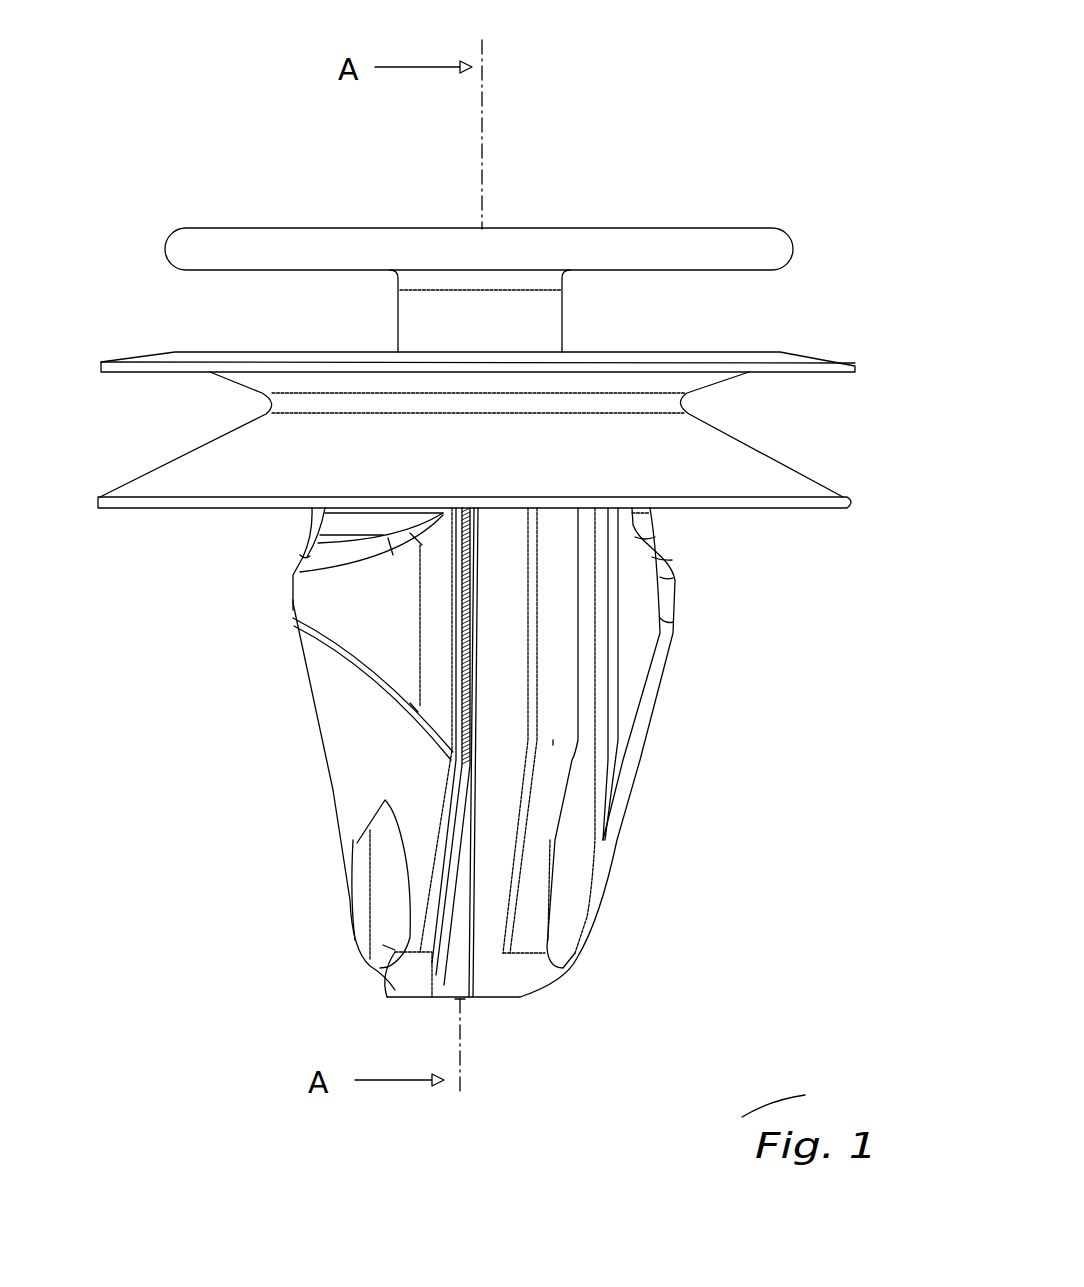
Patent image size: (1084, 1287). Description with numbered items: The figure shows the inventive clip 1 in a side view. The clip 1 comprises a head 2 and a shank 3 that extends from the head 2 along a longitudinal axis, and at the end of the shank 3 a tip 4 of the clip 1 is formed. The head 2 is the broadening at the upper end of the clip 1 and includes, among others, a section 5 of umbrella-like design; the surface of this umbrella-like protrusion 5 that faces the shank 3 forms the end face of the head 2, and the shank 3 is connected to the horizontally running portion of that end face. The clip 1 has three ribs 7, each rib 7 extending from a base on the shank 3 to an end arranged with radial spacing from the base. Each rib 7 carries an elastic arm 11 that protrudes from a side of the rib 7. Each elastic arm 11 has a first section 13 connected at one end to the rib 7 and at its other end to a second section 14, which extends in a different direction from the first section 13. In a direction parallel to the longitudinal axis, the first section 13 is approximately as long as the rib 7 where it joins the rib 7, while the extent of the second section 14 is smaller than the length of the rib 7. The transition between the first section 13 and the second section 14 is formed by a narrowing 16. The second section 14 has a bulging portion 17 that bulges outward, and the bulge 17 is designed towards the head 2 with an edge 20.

The clip 1 is at (687, 122).
The head 2 is at (870, 270).
The shank 3 is at (832, 727).
The tip 4 is at (512, 1074).
The umbrella-like section 5 is at (852, 504).
The rib 7 is at (550, 740).
The elastic arm 11 is at (395, 900).
The first section 13 is at (383, 945).
The second section 14 is at (355, 735).
The narrowing 16 is at (382, 822).
The bulging portion 17 is at (328, 598).
The edge 20 is at (300, 558).